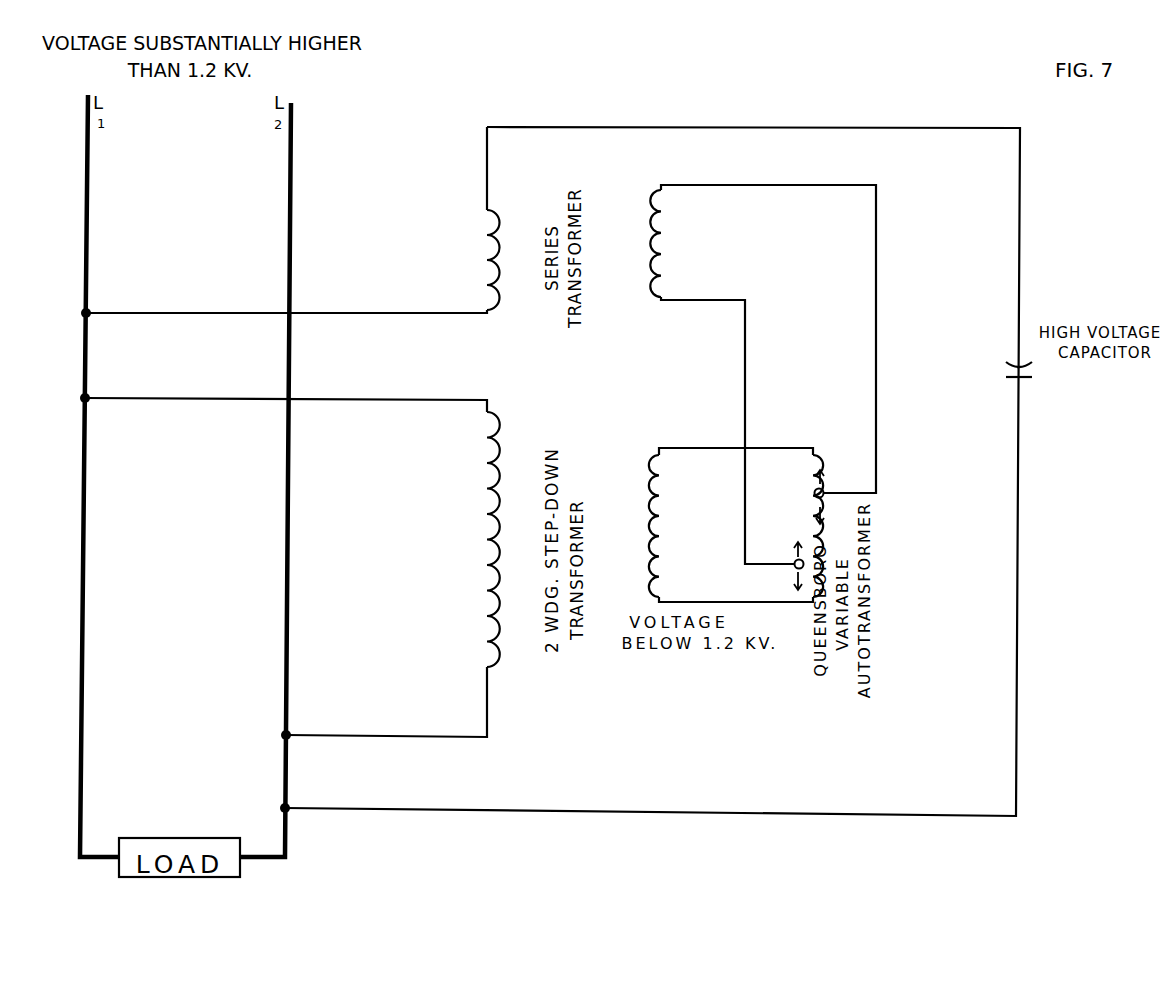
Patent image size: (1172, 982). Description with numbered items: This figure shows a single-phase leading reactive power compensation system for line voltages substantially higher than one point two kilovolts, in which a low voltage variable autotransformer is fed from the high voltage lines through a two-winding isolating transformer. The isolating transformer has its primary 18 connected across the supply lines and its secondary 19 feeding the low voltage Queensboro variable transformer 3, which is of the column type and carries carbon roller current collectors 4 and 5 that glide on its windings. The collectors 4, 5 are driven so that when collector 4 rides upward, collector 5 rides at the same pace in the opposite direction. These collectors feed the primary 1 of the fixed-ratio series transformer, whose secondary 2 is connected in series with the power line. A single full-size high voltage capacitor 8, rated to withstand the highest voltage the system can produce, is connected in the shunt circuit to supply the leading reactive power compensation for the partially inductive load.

The primary of the fixed-ratio series transformer 1 is at (667, 243).
The secondary of the fixed-ratio series transformer 2 is at (480, 260).
The variable transformer 3 is at (812, 526).
The current collector 4 is at (828, 497).
The current collector 5 is at (784, 566).
The capacitor 8 is at (1029, 373).
The primary of the two-winding fixed-ratio transformer 18 is at (478, 539).
The secondary of the two-winding fixed-ratio transformer 19 is at (665, 526).